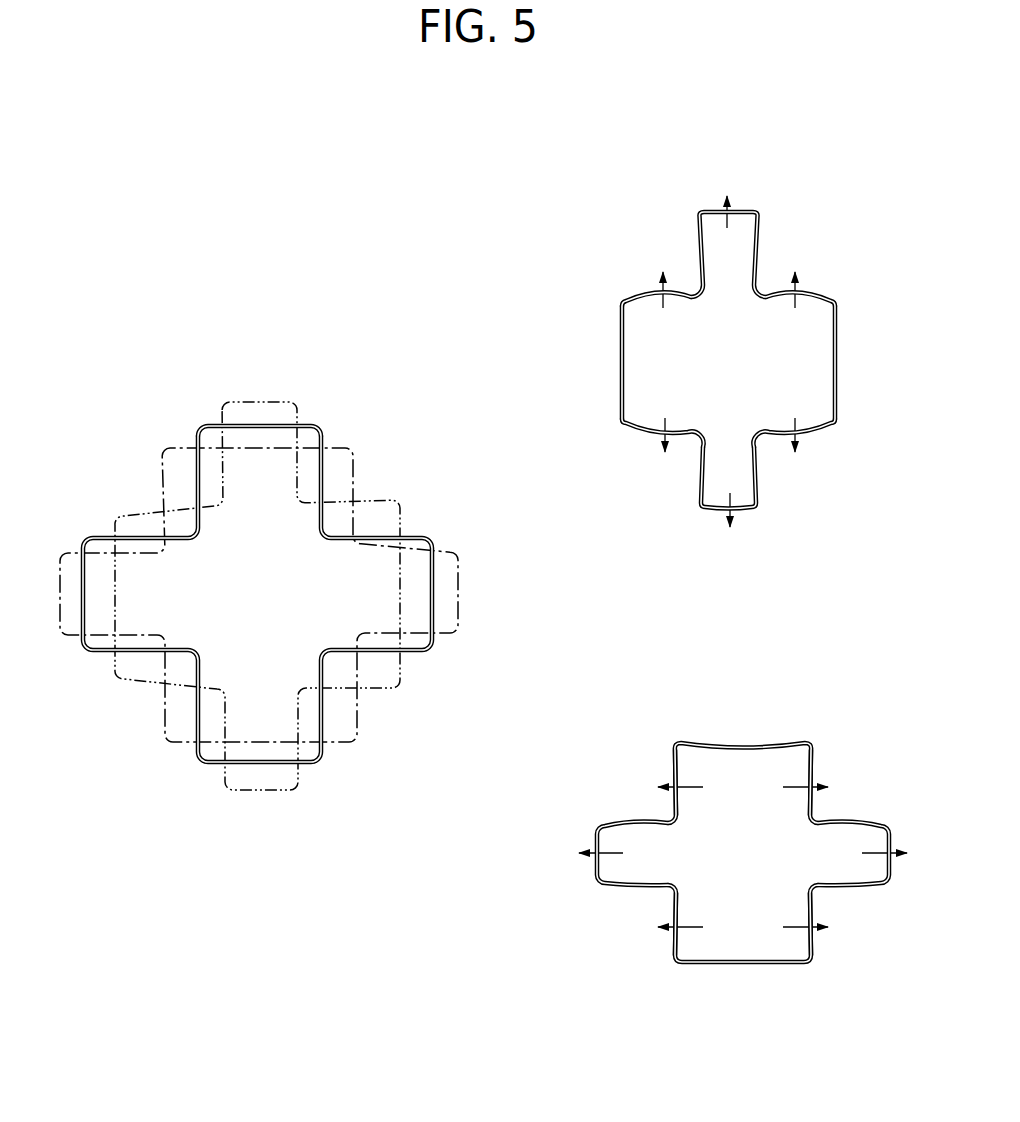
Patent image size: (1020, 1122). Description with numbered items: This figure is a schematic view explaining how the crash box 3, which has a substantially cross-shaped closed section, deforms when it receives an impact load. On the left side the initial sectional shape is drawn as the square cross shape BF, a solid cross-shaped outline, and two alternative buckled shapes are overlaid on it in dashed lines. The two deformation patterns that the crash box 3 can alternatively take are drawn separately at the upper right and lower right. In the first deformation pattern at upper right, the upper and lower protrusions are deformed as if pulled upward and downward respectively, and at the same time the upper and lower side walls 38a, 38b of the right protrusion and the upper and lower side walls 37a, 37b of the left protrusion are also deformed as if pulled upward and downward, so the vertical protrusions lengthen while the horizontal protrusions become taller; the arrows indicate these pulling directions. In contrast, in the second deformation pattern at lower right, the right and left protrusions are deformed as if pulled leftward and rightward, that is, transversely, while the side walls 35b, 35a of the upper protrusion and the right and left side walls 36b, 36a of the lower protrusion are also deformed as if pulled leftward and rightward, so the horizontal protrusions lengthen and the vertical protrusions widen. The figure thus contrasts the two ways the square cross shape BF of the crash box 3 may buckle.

The crash box 3 is at (316, 418).
The square cross shape BF is at (197, 430).
The side wall of upper protrusion 35a is at (814, 767).
The side wall of upper protrusion 35b is at (670, 760).
The left side wall of lower protrusion 36a is at (820, 943).
The right side wall of lower protrusion 36b is at (670, 942).
The upper side wall of left protrusion 37a is at (820, 292).
The lower side wall of left protrusion 37b is at (832, 427).
The upper side wall of right protrusion 38a is at (648, 292).
The lower side wall of right protrusion 38b is at (640, 428).